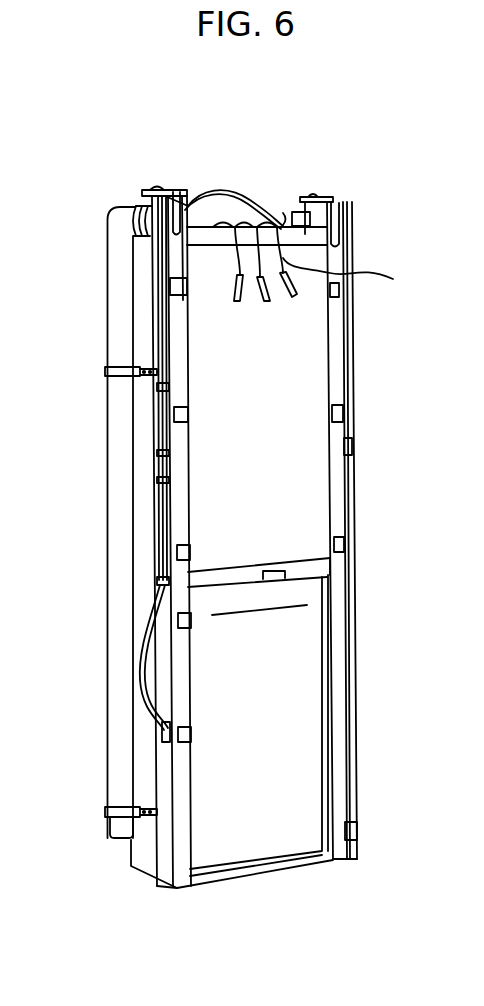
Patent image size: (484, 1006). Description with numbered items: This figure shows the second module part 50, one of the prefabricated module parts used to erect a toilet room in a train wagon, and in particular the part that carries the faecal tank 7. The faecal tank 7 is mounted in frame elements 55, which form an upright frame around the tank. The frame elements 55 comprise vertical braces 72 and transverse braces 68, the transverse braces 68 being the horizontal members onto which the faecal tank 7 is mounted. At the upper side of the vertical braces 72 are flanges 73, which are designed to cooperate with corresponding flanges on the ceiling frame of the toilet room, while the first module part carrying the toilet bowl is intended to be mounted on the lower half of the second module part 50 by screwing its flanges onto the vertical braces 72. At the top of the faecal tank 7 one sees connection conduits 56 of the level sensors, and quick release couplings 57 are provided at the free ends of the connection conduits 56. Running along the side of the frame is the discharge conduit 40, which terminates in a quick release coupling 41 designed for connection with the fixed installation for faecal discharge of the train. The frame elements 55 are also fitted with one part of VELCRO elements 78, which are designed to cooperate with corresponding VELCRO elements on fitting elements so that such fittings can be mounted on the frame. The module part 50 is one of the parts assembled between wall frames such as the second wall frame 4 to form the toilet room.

The second wall frame 4 is at (160, 176).
The faecal tank 7 is at (300, 325).
The discharge conduit 40 is at (121, 303).
The quick release coupling 41 is at (120, 827).
The second module part 50 is at (261, 188).
The frame elements 55 is at (158, 212).
The connection conduits 56 is at (300, 290).
The quick release couplings 57 is at (351, 277).
The transverse braces 68 is at (222, 233).
The vertical braces 72 is at (177, 455).
The flanges 73 is at (167, 190).
The VELCRO elements 78 is at (172, 413).